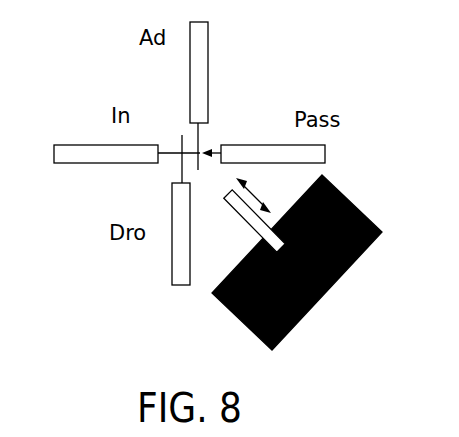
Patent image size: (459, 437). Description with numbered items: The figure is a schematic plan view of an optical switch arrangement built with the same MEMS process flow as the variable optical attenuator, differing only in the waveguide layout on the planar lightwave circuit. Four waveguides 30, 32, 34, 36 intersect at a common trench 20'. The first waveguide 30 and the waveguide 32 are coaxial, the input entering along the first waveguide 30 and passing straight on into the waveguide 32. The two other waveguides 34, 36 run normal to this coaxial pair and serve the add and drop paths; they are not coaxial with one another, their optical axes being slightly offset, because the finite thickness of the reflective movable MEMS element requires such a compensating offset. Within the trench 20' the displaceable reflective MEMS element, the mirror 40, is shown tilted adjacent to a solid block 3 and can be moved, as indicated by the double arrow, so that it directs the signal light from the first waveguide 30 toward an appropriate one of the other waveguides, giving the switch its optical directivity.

The first waveguide 30 is at (79, 146).
The waveguide 34 is at (208, 38).
The waveguide 32 is at (325, 153).
The waveguide 36 is at (172, 272).
The common trench 20' is at (245, 127).
The optical block 3 is at (337, 282).
The displaceable reflective MEMS element (mirror) 40 is at (223, 200).